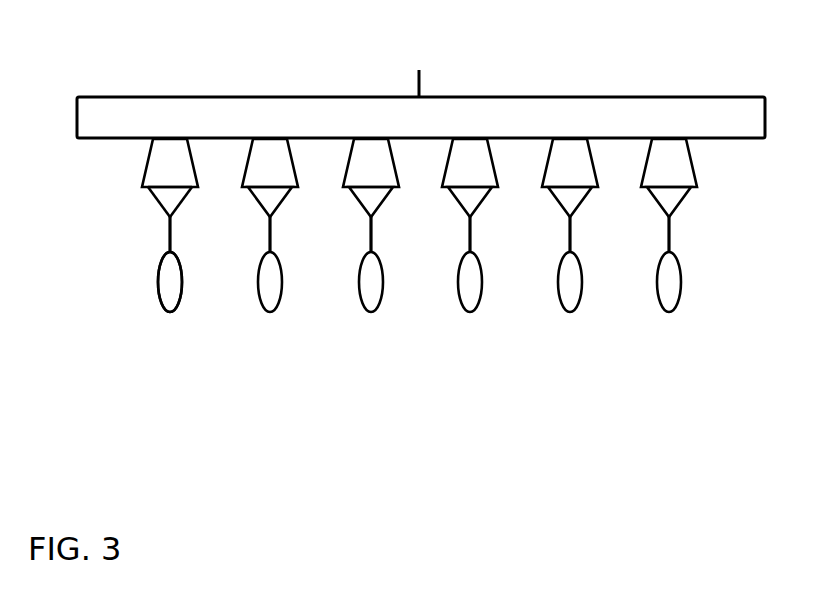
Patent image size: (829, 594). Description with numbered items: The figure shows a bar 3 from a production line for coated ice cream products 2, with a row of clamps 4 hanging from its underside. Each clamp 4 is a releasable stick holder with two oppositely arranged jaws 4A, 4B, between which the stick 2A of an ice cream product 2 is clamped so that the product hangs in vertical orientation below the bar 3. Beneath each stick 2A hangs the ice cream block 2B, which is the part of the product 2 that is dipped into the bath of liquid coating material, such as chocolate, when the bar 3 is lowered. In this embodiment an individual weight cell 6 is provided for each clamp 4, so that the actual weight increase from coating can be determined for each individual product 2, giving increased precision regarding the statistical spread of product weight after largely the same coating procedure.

The ice cream product 2 is at (181, 324).
The stick 2A is at (182, 250).
The ice cream block 2B is at (172, 290).
The bar 3 is at (217, 112).
The clamp 4 is at (149, 139).
The jaw 4A is at (155, 201).
The jaw 4B is at (185, 205).
The weight cell 6 is at (470, 152).